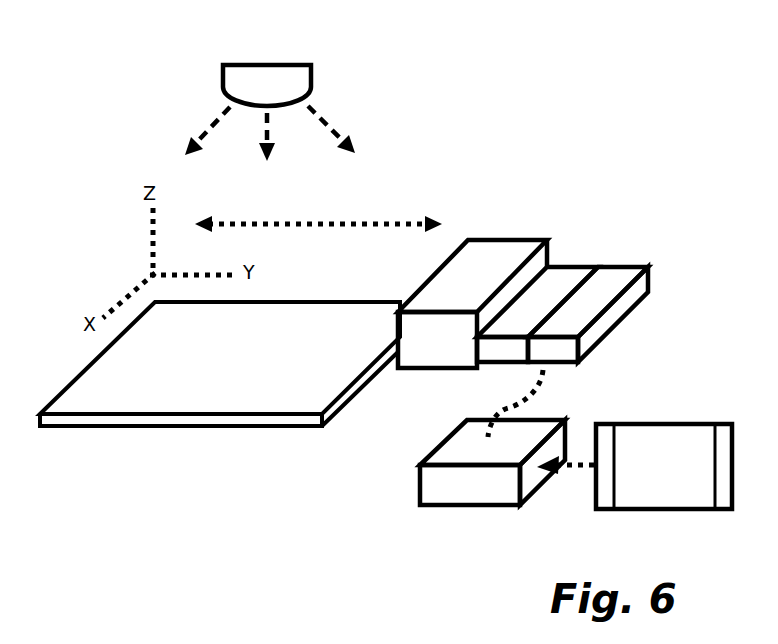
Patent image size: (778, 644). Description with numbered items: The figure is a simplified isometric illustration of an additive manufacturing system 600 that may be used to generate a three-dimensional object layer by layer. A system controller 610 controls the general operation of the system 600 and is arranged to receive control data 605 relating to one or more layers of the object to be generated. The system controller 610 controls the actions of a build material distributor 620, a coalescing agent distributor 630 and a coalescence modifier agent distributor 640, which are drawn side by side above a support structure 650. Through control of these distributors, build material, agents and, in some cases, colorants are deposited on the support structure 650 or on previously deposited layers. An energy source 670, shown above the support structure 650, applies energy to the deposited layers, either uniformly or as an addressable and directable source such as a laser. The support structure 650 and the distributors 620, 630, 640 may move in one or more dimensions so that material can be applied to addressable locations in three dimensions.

The additive manufacturing system 600 is at (90, 62).
The control data 605 is at (634, 466).
The system controller 610 is at (420, 478).
The build material distributor 620 is at (505, 238).
The coalescing agent distributor 630 is at (573, 263).
The coalescence modifier agent distributor 640 is at (625, 265).
The support structure 650 is at (300, 430).
The energy source 670 is at (270, 63).